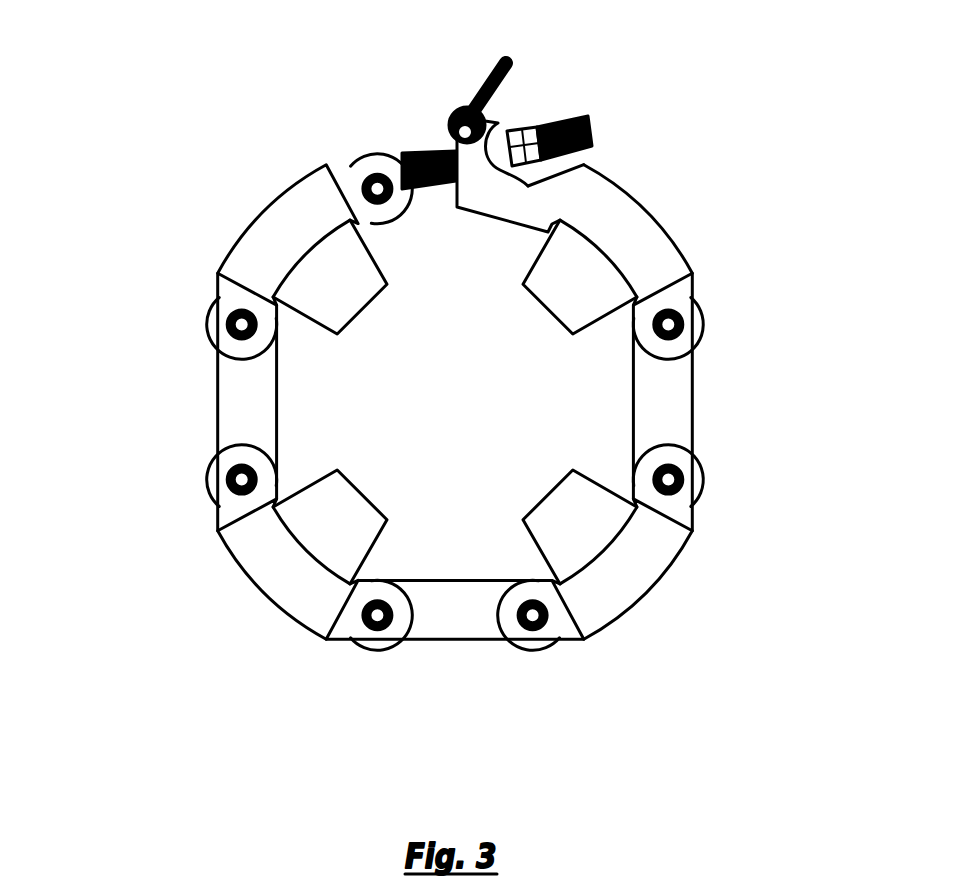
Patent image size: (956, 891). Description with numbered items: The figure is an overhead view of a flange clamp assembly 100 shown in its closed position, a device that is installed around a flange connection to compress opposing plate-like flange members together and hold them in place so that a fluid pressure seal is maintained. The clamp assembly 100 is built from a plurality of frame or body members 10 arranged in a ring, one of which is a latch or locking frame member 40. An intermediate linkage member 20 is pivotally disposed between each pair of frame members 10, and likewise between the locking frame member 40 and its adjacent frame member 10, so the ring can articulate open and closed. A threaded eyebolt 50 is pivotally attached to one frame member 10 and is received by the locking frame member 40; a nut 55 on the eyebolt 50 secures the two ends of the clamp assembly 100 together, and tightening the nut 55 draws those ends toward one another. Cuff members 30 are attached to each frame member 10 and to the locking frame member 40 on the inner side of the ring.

The flange clamp assembly 100 is at (258, 206).
The frame member 10 is at (216, 272).
The intermediate linkage member 20 is at (228, 403).
The cuff member 30 is at (346, 308).
The locking frame member 40 is at (692, 278).
The threaded eyebolt 50 is at (420, 152).
The nut 55 is at (527, 126).